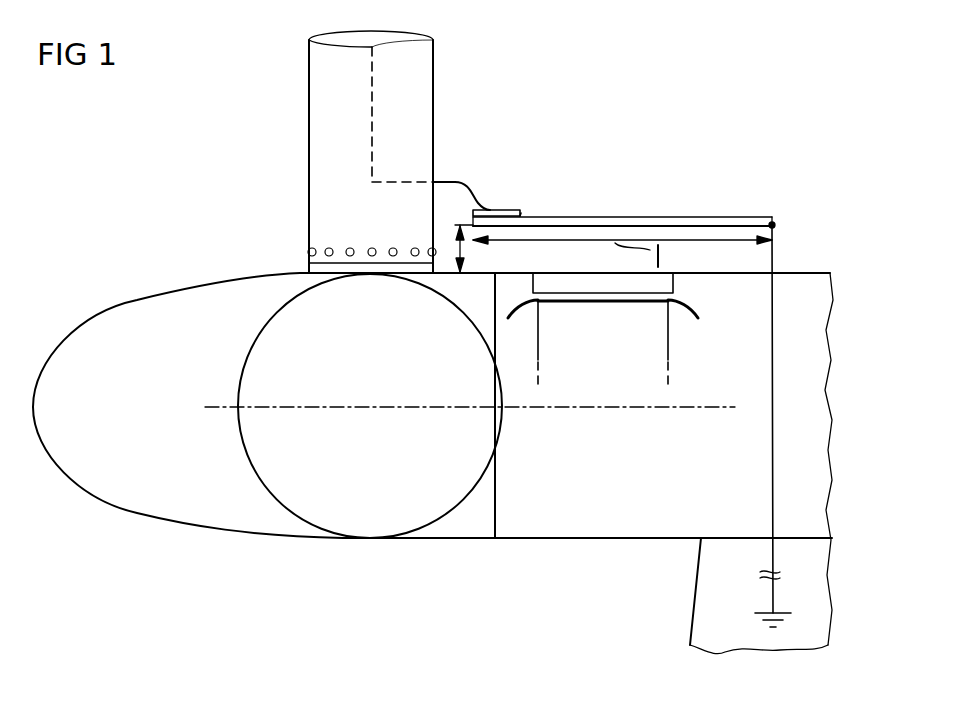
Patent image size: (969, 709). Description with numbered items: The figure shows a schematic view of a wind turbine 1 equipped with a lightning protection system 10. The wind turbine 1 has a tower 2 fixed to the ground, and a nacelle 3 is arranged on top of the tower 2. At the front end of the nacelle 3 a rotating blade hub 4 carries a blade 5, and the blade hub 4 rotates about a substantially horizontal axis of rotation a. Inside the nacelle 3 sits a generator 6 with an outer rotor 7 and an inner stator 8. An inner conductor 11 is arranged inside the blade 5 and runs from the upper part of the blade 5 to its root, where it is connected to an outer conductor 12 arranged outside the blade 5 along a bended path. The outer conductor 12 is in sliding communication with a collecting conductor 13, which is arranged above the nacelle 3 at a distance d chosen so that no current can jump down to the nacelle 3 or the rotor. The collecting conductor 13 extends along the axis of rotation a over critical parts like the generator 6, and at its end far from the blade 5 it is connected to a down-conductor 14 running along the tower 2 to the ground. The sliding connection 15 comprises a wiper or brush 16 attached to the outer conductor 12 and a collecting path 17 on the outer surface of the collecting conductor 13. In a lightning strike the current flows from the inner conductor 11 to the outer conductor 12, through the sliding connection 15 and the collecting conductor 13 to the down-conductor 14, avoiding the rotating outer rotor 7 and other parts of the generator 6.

The wind turbine 1 is at (126, 520).
The tower 2 is at (700, 601).
The nacelle 3 is at (555, 540).
The blade hub 4 is at (236, 530).
The blade 5 is at (326, 200).
The generator 6 is at (673, 338).
The outer rotor 7 is at (665, 292).
The inner stator 8 is at (692, 320).
The lightning protection system 10 is at (599, 120).
The inner conductor 11 is at (372, 102).
The outer conductor 12 is at (450, 180).
The collecting conductor 13 is at (677, 217).
The down-conductor 14 is at (772, 485).
The sliding connection 15 is at (517, 188).
The wiper or brush 16 is at (495, 208).
The collecting path 17 is at (522, 214).
The axis of rotation a is at (598, 410).
The distance d is at (455, 251).